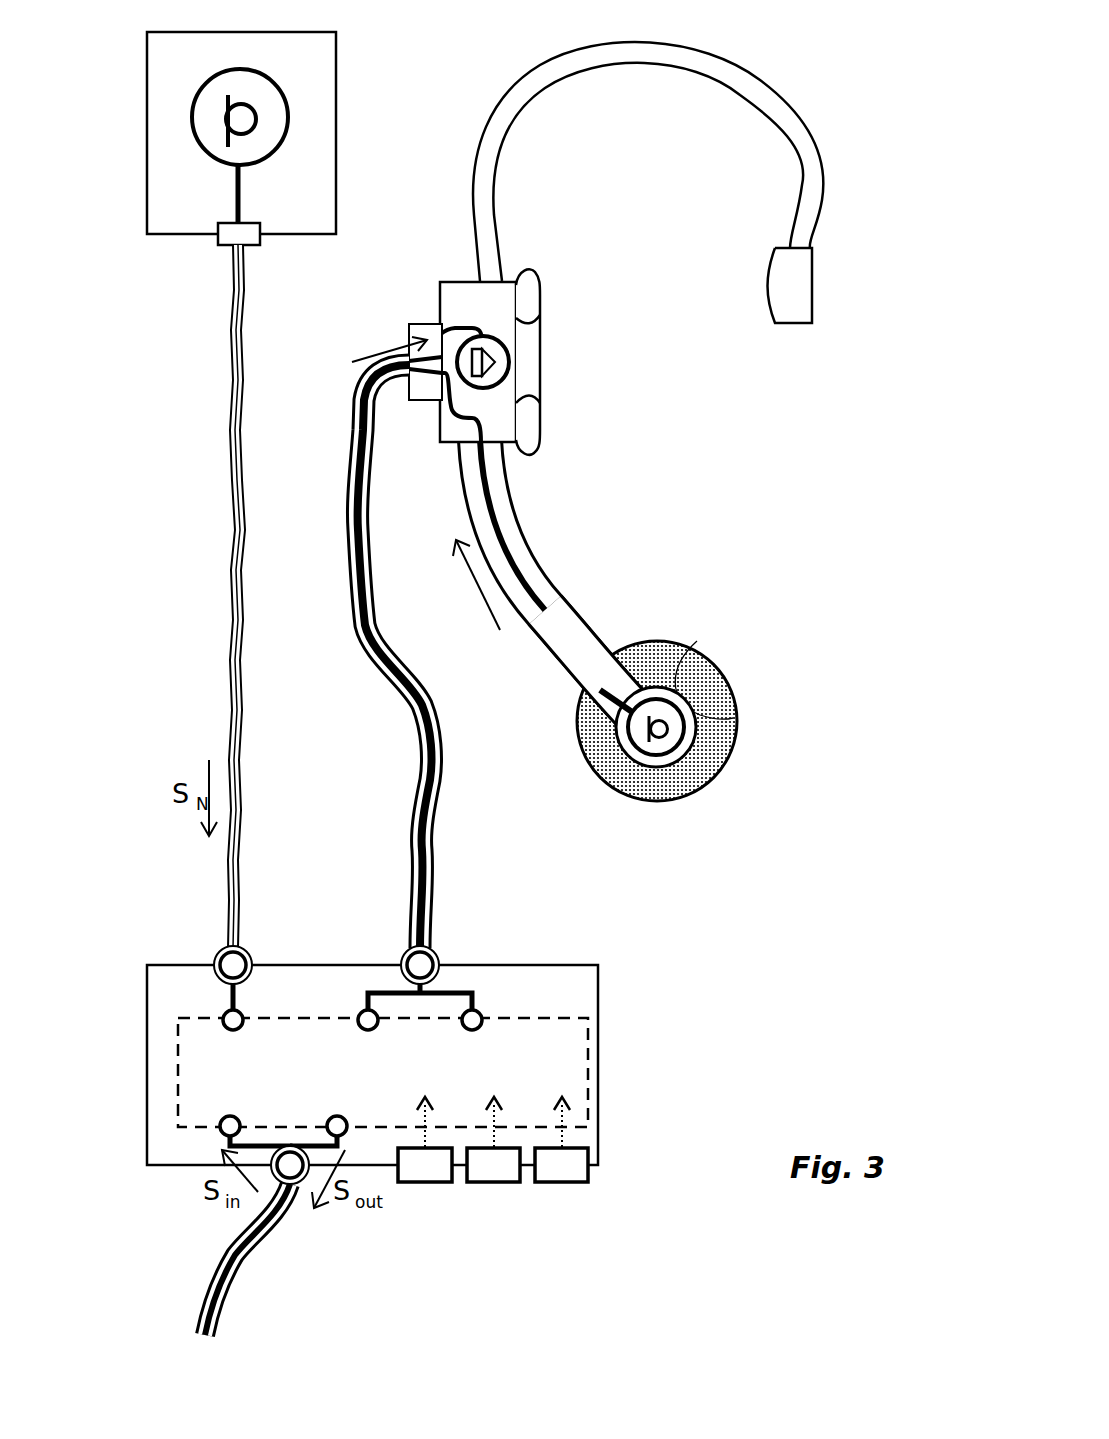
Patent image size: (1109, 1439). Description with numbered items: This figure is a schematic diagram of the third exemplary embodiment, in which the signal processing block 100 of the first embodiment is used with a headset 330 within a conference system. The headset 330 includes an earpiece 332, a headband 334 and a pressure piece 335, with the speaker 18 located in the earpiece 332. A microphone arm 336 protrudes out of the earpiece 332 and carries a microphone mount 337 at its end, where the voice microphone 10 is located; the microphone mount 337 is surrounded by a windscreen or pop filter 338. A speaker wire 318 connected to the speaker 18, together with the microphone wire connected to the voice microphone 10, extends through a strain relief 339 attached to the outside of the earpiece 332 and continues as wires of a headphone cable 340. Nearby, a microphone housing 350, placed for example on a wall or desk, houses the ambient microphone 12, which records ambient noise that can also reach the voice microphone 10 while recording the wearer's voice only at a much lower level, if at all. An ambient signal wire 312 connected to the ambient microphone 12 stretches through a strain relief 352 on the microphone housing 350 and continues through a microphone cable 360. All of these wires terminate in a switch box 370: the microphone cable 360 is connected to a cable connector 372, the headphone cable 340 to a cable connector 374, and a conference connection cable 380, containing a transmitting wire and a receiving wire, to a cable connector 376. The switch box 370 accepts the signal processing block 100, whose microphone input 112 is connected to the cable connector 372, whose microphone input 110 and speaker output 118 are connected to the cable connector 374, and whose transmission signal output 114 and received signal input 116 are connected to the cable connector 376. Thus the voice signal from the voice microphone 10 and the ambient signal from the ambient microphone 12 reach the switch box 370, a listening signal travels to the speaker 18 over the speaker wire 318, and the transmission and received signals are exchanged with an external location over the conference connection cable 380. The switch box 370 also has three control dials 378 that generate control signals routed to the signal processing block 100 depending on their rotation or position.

The voice microphone 10 is at (690, 722).
The ambient microphone 12 is at (288, 118).
The speaker 18 is at (444, 410).
The signal processing block 100 is at (313, 1089).
The microphone input 110 is at (478, 1011).
The microphone input 112 is at (241, 1011).
The transmission signal output 114 is at (344, 1136).
The received signal input 116 is at (220, 1134).
The speaker output 118 is at (361, 1009).
The ambient signal wire 312 is at (245, 200).
The speaker wire 318 is at (462, 328).
The headset 330 is at (663, 312).
The earpiece 332 is at (540, 432).
The headband 334 is at (812, 118).
The pressure piece 335 is at (813, 290).
The microphone arm 336 is at (550, 595).
The microphone mount 337 is at (697, 641).
The windscreen or pop filter 338 is at (735, 745).
The strain relief 339 is at (414, 323).
The headphone cable 340 is at (450, 748).
The microphone housing 350 is at (209, 72).
The strain relief 352 is at (235, 248).
The microphone cable 360 is at (230, 622).
The switch box 370 is at (208, 1008).
The cable connector 372 is at (216, 955).
The cable connector 374 is at (437, 957).
The cable connector 376 is at (306, 1182).
The control dials 378 is at (425, 1182).
The conference connection cable 380 is at (247, 1253).